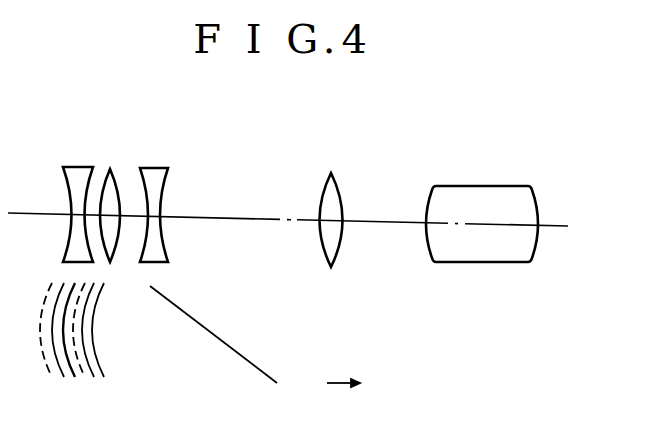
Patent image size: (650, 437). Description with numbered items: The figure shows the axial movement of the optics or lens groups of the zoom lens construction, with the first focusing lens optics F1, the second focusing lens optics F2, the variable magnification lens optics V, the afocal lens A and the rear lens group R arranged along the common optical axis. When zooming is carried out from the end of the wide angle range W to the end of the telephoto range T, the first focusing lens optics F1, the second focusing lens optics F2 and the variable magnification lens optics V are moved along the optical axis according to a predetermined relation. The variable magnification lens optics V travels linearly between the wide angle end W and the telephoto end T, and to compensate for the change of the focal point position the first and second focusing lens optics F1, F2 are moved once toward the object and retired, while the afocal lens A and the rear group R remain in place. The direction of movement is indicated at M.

The first focusing lens optics F1 is at (76, 166).
The second focusing lens optics F2 is at (110, 168).
The variable magnification lens optics V is at (152, 167).
The afocal lens A is at (332, 172).
The lens group R is at (478, 185).
The wide angle range end W is at (96, 320).
The telephoto range end T is at (219, 342).
The direction of movement M is at (354, 381).